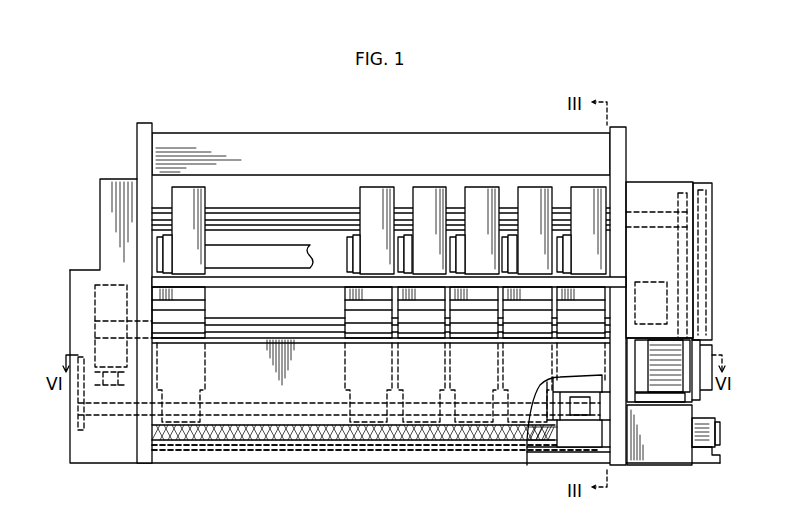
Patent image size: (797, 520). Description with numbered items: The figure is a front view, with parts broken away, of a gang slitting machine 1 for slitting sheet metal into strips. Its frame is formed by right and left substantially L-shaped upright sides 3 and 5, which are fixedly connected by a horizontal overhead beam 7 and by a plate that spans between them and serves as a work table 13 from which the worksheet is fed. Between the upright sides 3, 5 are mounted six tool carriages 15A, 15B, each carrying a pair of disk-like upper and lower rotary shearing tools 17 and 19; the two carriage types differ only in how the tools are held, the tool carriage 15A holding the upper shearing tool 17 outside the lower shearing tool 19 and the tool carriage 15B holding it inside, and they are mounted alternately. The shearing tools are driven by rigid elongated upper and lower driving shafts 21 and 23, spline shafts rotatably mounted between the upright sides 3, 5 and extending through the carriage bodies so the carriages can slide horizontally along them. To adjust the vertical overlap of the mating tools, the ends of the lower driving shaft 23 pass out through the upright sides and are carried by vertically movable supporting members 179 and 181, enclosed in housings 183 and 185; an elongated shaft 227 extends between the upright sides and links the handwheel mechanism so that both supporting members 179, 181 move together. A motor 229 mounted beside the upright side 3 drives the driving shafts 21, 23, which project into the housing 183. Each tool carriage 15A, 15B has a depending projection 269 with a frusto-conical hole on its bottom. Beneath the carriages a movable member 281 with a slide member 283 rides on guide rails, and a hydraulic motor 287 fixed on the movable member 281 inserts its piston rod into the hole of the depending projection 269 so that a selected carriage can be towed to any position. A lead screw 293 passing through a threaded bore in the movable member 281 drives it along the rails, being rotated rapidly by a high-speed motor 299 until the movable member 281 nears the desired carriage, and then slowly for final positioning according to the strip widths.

The gang slitting machine 1 is at (459, 126).
The upright side 3 is at (620, 163).
The upright side 5 is at (138, 161).
The horizontal overhead beam 7 is at (245, 140).
The work table 13 is at (263, 279).
The tool carriage 15A is at (355, 193).
The tool carriage 15B is at (213, 197).
The upper shearing tool 17 is at (348, 252).
The lower shearing tool 19 is at (398, 273).
The upper driving shaft 21 is at (294, 207).
The lower driving shaft 23 is at (96, 345).
The supporting member 179 is at (652, 282).
The supporting member 181 is at (110, 282).
The housing 183 is at (660, 192).
The housing 185 is at (102, 207).
The shaft 227 is at (266, 402).
The motor 229 is at (673, 385).
The depending projection 269 is at (378, 447).
The movable member 281 is at (592, 425).
The slide member 283 is at (573, 441).
The hydraulic motor 287 is at (580, 398).
The lead screw 293 is at (296, 441).
The high-speed motor 299 is at (706, 422).